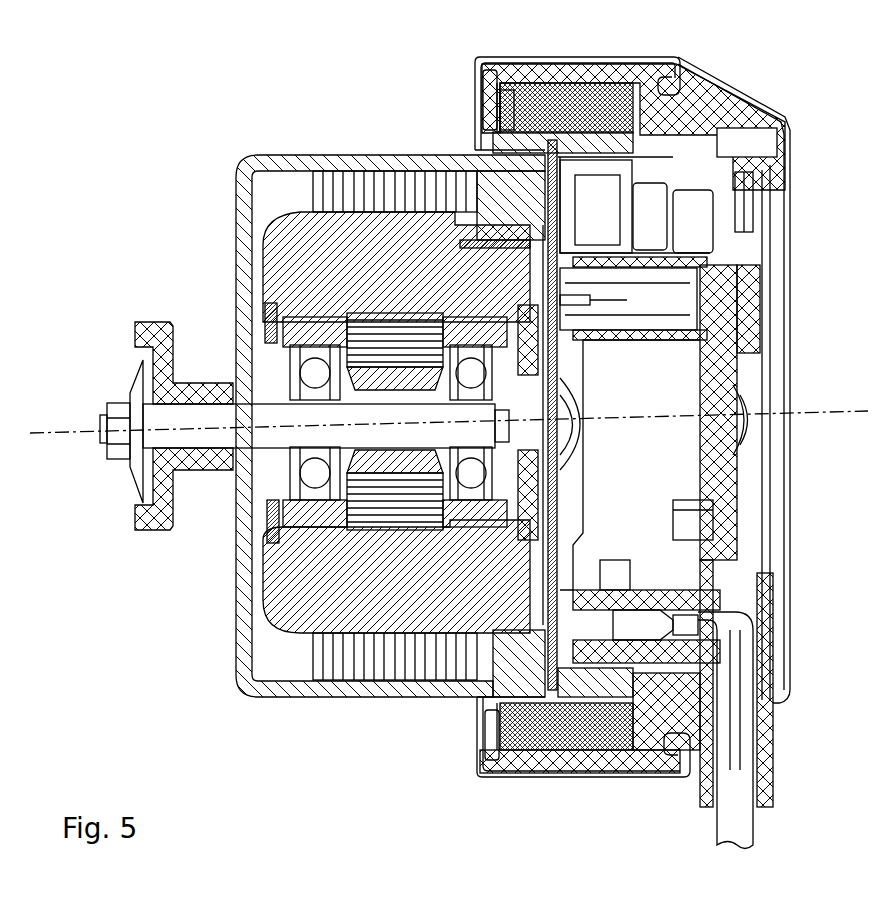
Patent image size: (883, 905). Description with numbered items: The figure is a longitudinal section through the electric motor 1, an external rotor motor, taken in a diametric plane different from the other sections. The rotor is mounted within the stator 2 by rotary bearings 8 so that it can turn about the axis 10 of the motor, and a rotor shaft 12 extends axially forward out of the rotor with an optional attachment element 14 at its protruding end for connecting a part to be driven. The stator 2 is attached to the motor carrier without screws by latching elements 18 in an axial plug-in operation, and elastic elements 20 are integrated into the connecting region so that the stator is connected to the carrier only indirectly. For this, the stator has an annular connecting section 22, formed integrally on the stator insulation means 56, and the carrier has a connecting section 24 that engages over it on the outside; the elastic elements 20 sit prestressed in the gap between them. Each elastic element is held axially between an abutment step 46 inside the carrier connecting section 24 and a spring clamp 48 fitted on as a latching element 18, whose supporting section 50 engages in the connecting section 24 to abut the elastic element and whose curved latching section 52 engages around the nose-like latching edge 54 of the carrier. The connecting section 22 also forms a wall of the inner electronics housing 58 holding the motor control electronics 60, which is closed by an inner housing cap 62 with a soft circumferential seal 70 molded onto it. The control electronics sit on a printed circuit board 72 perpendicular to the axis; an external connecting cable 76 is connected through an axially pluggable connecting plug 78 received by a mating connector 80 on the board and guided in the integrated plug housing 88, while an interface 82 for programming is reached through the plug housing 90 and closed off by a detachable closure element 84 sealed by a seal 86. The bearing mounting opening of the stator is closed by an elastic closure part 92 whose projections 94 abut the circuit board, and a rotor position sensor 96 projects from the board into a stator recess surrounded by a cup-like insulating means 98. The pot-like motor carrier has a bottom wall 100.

The electric motor 1 is at (447, 722).
The stator 2 is at (333, 567).
The rotary bearings 8 is at (270, 538).
The axis 10 is at (57, 431).
The rotor shaft 12 is at (245, 418).
The attachment element 14 is at (143, 313).
The latching elements 18 is at (478, 53).
The elastic elements 20 is at (605, 95).
The connecting section 22 is at (525, 85).
The connecting section 24 is at (577, 77).
The abutment step 46 is at (660, 77).
The spring clamp 48 is at (570, 77).
The supporting section 50 is at (480, 110).
The latching section 52 is at (693, 70).
The latching edge 54 is at (657, 87).
The stator insulation means 56 is at (235, 240).
The inner electronics housing 58 is at (745, 120).
The motor control electronics 60 is at (597, 403).
The inner housing cap 62 is at (740, 222).
The circumferential seal 70 is at (640, 143).
The printed circuit board 72 is at (560, 473).
The external connecting cable 76 is at (743, 820).
The connecting plug 78 is at (777, 628).
The mating connector 80 is at (583, 583).
The interface 82 is at (627, 307).
The closure element 84 is at (767, 273).
The seal 86 is at (767, 208).
The plug housing 88 is at (620, 578).
The plug housing 90 is at (678, 337).
The closure part 92 is at (443, 462).
The projections 94 is at (575, 415).
The sensor 96 is at (485, 172).
The insulating means 98 is at (367, 240).
The bottom wall 100 is at (760, 467).